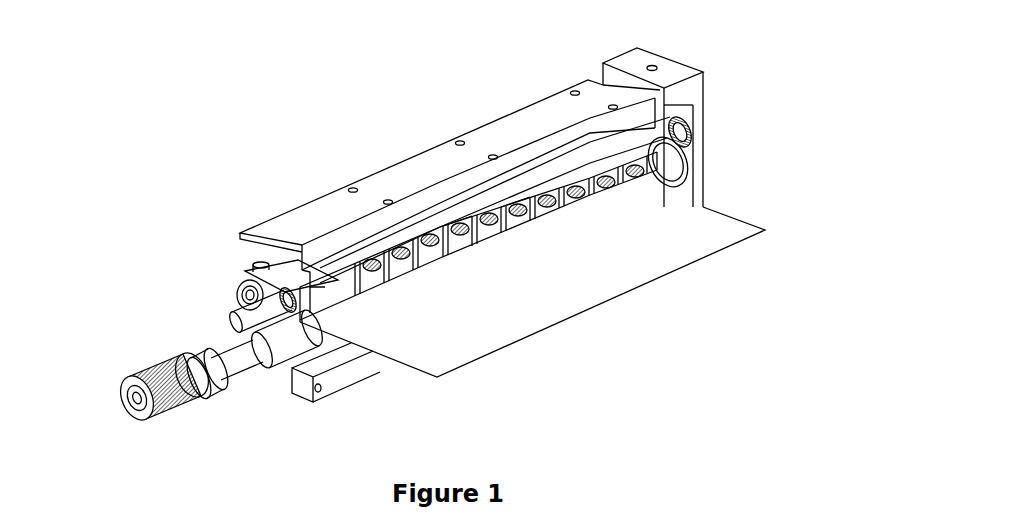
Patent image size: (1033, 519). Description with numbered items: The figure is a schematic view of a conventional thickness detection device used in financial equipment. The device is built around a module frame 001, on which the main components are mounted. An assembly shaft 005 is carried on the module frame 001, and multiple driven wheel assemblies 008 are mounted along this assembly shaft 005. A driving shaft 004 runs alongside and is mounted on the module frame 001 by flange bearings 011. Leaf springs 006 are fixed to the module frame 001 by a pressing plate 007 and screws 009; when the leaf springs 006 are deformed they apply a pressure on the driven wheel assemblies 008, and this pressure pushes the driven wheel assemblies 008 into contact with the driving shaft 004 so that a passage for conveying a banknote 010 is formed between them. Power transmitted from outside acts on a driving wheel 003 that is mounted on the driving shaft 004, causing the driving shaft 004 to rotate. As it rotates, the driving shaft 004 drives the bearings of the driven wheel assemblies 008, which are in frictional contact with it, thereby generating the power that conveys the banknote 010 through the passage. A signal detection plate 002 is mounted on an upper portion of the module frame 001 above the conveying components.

The module frame 001 is at (624, 110).
The signal detection plate 002 is at (447, 183).
The driving wheel 003 is at (168, 404).
The driving shaft 004 is at (281, 380).
The assembly shaft 005 is at (216, 309).
The leaf springs 006 is at (249, 284).
The pressing plate 007 is at (478, 270).
The driven wheel assemblies 008 is at (518, 289).
The screws 009 is at (576, 262).
The banknote 010 is at (532, 292).
The flange bearings 011 is at (540, 198).